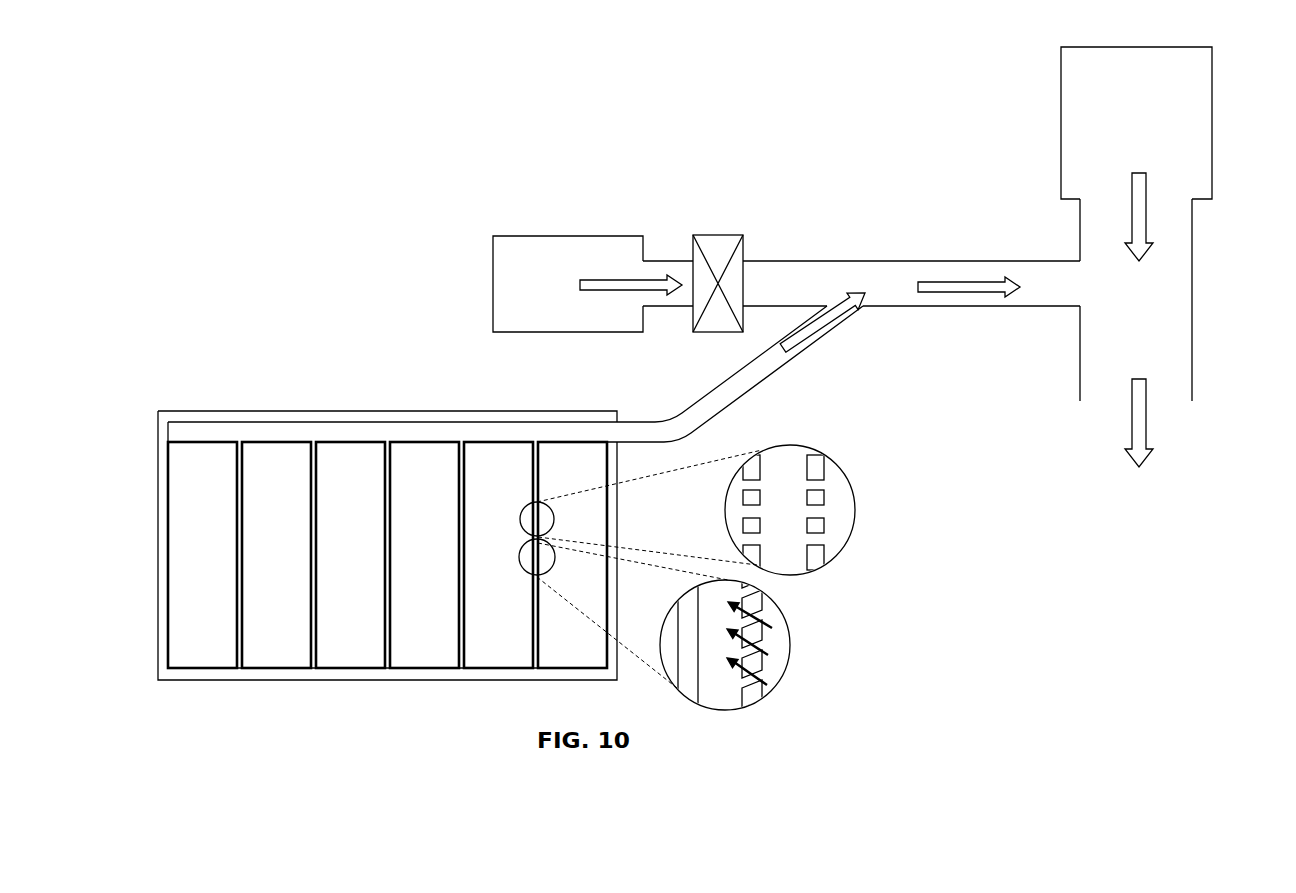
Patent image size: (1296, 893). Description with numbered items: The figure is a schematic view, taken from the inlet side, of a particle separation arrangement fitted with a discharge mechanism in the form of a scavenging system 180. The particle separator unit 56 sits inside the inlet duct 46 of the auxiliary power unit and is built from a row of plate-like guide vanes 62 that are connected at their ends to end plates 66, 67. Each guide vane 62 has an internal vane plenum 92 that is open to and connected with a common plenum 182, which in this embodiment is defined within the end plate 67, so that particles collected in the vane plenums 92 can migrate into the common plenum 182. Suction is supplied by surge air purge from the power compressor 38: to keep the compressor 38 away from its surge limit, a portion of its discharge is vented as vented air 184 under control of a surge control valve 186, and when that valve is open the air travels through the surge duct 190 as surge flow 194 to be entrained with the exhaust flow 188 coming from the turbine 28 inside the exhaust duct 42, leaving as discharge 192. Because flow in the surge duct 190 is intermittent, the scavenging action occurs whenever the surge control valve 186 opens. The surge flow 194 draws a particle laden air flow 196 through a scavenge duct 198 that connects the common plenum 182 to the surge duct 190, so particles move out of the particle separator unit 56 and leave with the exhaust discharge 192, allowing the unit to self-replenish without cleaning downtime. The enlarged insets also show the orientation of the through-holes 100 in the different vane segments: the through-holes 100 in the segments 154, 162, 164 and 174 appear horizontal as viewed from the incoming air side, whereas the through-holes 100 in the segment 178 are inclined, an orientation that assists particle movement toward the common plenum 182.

The scavenging system 180 is at (338, 273).
The power compressor 38 is at (548, 303).
The turbine 28 is at (1148, 108).
The vented air 184 is at (643, 278).
The surge control valve 186 is at (718, 233).
The surge duct 190 is at (940, 261).
The surge flow 194 is at (970, 292).
The exhaust flow 188 is at (1148, 195).
The discharge 192 is at (1146, 421).
The exhaust duct 42 is at (1196, 349).
The particle laden air flow 196 is at (818, 333).
The scavenge duct 198 is at (728, 403).
The common plenum 182 is at (197, 428).
The end plate 67 is at (165, 433).
The inlet duct 46 is at (157, 570).
The end plate 66 is at (185, 675).
The particle separator unit 56 is at (203, 652).
The vane plenums 92 is at (388, 570).
The guide vanes 62 is at (533, 462).
The segment 162 is at (733, 511).
The segment 164 is at (714, 536).
The segment 154 is at (840, 499).
The segment 174 is at (876, 511).
The through-holes 100 is at (818, 542).
The segment 178 is at (779, 657).